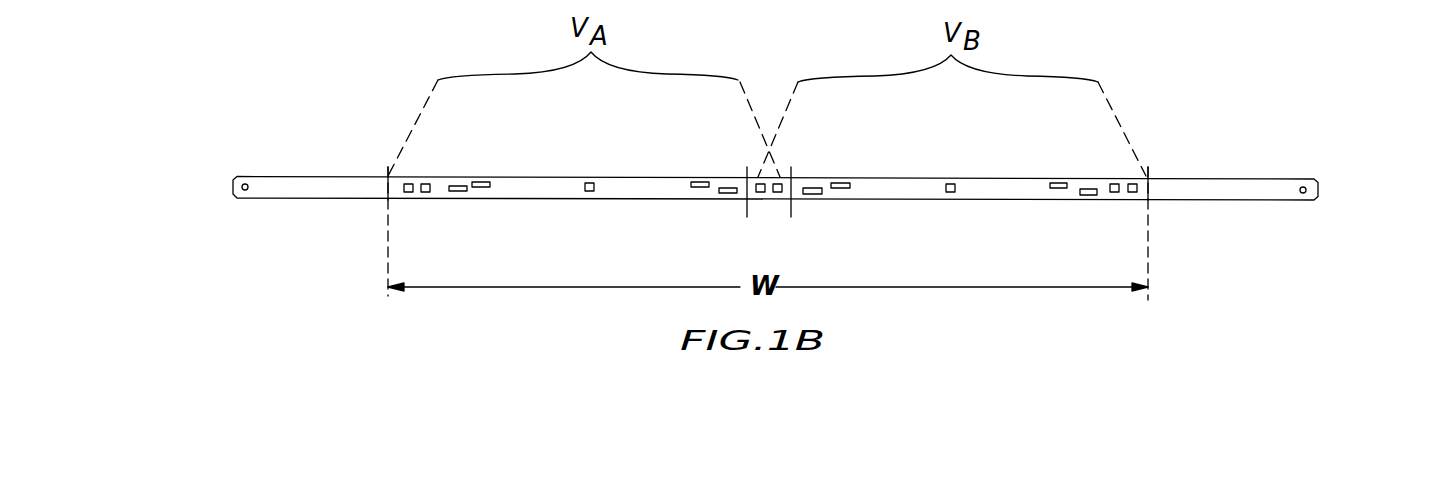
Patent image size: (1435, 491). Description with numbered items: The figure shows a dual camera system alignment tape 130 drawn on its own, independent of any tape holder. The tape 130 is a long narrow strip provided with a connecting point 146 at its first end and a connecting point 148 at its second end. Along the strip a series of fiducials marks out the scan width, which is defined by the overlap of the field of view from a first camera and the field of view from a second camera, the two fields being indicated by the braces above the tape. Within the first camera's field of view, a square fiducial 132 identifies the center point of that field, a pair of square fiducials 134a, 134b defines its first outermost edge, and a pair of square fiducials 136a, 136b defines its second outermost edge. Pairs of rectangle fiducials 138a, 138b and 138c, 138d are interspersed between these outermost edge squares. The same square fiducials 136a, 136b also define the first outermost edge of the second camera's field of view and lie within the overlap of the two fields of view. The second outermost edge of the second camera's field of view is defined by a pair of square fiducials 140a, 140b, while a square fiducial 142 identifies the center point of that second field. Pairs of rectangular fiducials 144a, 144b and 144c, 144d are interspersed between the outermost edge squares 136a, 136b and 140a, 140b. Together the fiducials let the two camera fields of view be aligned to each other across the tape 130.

The dual camera system alignment tape 130 is at (322, 183).
The square fiducial 132 is at (588, 195).
The square fiducial 134a is at (408, 193).
The square fiducial 134b is at (428, 184).
The square fiducial 136a is at (758, 183).
The square fiducial 136b is at (777, 183).
The rectangle fiducial 138a is at (460, 185).
The rectangle fiducial 138b is at (482, 182).
The rectangle fiducial 138c is at (698, 189).
The rectangle fiducial 138d is at (727, 195).
The square fiducial 140a is at (1114, 193).
The square fiducial 140b is at (1132, 193).
The square fiducial 142 is at (950, 193).
The rectangular fiducial 144a is at (812, 187).
The rectangular fiducial 144b is at (840, 182).
The rectangular fiducial 144c is at (1060, 181).
The rectangular fiducial 144d is at (1088, 188).
The connecting point 146 is at (243, 197).
The connecting point 148 is at (1303, 197).